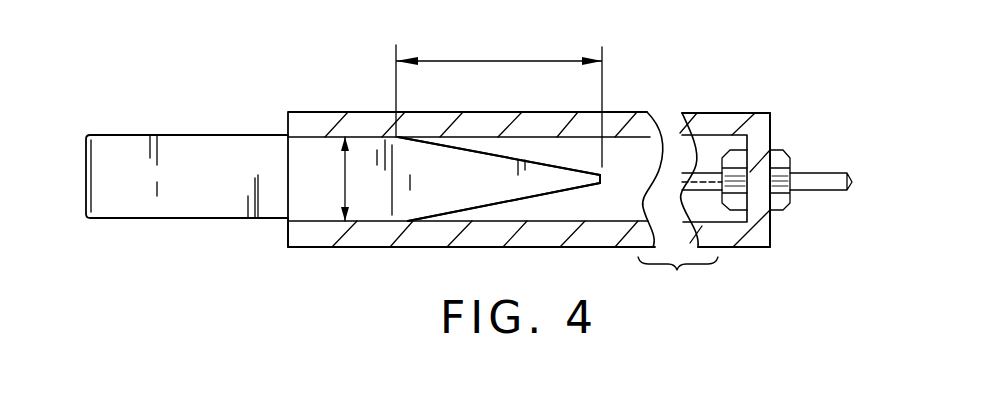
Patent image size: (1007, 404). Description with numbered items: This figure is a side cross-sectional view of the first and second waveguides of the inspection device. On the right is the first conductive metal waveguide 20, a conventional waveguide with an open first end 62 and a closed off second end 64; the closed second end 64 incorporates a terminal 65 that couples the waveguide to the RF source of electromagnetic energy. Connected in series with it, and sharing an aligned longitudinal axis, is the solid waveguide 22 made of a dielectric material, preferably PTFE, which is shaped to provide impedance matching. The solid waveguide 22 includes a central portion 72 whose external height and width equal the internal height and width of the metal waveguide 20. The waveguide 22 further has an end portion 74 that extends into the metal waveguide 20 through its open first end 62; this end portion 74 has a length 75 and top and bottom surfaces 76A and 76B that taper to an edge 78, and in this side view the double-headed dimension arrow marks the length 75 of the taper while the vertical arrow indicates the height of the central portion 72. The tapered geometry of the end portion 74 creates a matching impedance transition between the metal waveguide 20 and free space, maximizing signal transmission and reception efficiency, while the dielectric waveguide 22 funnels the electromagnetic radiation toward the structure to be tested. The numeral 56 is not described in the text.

The first conductive waveguide 20 is at (690, 112).
The solid waveguide 22 is at (124, 132).
The tubular sleeve 56 is at (345, 177).
The open first end 62 is at (286, 229).
The closed off second end 64 is at (774, 130).
The terminal 65 is at (794, 198).
The central portion 72 is at (322, 196).
The end portion 74 is at (528, 163).
The length 75 is at (497, 61).
The top surface 76A is at (558, 167).
The bottom surface 76B is at (502, 203).
The edge 78 is at (604, 178).